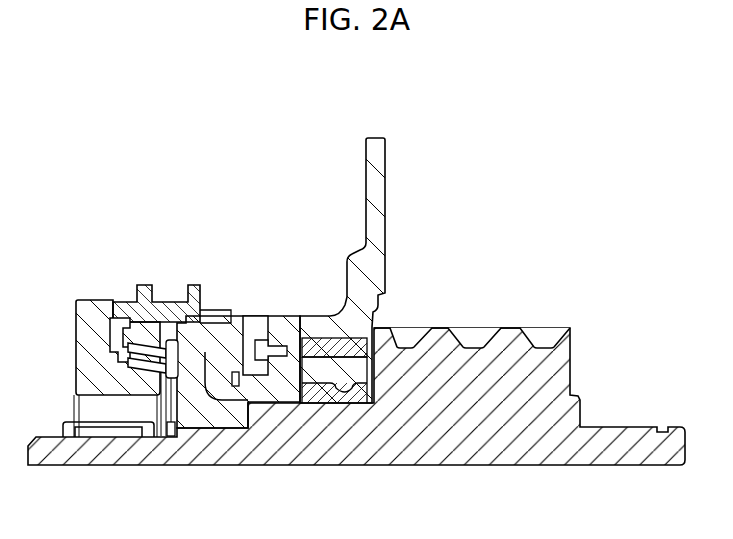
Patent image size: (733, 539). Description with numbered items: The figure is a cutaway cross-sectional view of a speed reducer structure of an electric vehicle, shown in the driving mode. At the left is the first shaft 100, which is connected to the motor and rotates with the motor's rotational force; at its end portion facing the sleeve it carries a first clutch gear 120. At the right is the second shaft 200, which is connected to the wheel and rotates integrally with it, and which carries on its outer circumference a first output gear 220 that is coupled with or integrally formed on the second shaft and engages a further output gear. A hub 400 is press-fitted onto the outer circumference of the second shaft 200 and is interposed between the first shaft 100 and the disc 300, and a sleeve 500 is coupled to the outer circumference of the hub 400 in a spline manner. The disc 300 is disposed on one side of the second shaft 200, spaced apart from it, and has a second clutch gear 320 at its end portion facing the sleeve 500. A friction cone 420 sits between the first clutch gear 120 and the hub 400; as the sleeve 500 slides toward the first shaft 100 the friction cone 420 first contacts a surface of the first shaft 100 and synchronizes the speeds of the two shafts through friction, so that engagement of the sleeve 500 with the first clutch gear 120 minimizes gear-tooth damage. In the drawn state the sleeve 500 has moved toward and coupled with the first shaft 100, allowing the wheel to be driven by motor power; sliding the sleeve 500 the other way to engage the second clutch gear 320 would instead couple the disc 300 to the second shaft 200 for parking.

The first shaft 100 is at (77, 327).
The first clutch gear 120 is at (113, 347).
The second shaft 200 is at (407, 460).
The first output gear 220 is at (510, 327).
The disc 300 is at (380, 185).
The second clutch gear 320 is at (258, 328).
The hub 400 is at (207, 424).
The friction cone 420 is at (145, 353).
The sleeve 500 is at (143, 285).